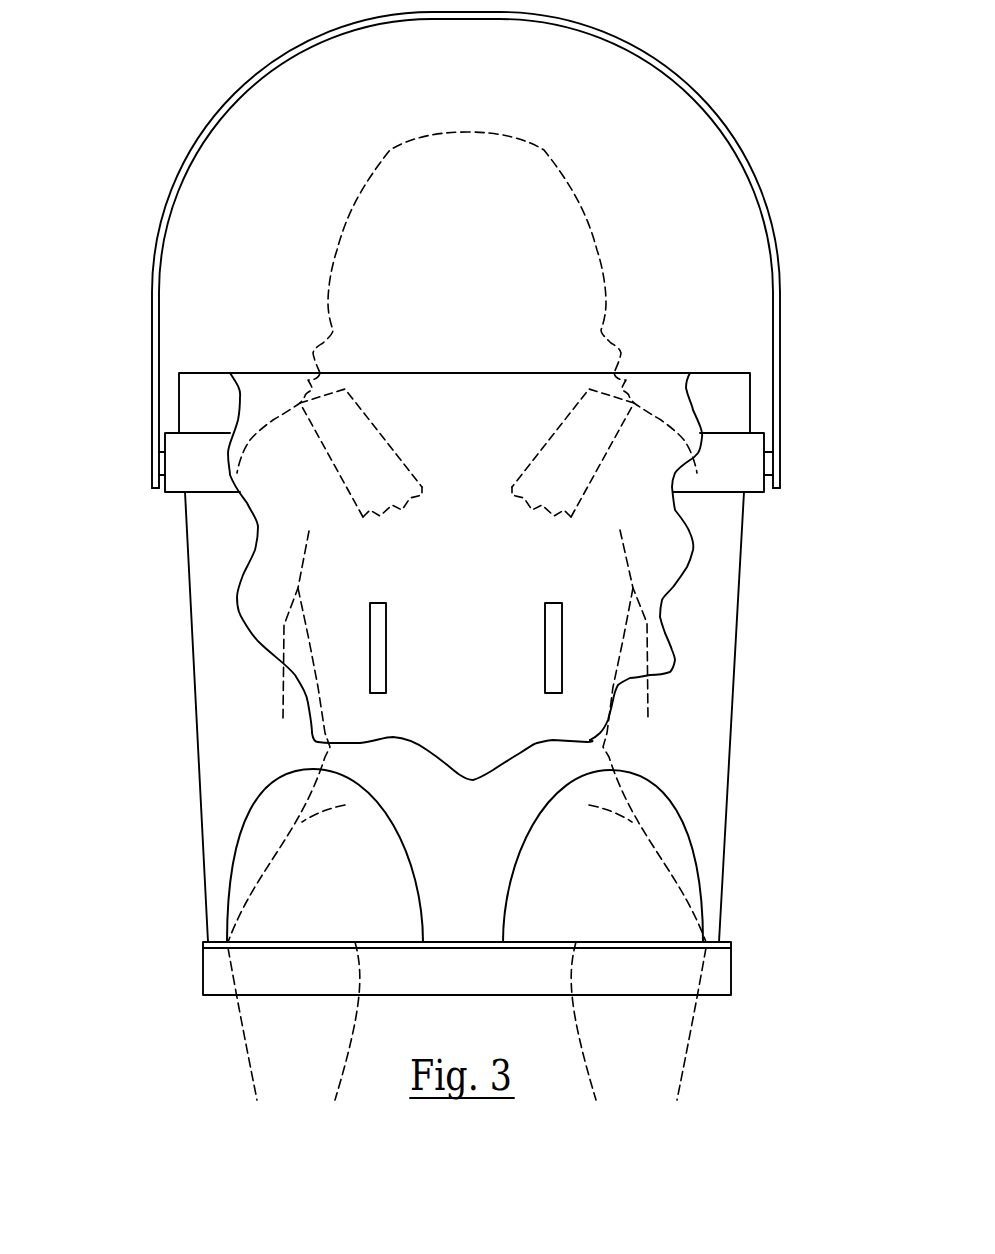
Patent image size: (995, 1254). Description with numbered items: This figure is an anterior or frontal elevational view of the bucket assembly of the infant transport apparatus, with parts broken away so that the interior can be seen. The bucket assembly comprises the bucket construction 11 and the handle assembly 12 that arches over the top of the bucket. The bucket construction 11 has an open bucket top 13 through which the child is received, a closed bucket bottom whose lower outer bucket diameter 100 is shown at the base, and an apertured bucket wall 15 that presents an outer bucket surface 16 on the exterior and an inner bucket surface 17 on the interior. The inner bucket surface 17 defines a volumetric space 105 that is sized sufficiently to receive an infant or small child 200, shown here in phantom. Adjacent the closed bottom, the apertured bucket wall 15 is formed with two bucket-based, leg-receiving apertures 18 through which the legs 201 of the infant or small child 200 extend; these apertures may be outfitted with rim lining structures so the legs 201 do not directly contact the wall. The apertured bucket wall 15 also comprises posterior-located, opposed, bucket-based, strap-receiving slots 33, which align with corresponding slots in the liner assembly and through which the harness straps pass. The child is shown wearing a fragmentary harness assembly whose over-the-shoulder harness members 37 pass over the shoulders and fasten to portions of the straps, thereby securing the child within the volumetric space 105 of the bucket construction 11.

The bucket construction 11 is at (735, 652).
The handle assembly 12 is at (651, 64).
The open bucket top 13 is at (271, 306).
The apertured bucket wall 15 is at (222, 642).
The outer bucket surface 16 is at (705, 598).
The inner bucket surface 17 is at (273, 512).
The bucket-based, leg-receiving apertures 18 is at (263, 853).
The bucket-based strap-receiving slots 33 is at (386, 645).
The over-the-shoulder harness members 37 is at (372, 420).
The lower outer bucket diameter 100 is at (476, 995).
The volumetric space 105 is at (508, 562).
The infant or small child 200 is at (542, 152).
The legs 201 is at (298, 843).